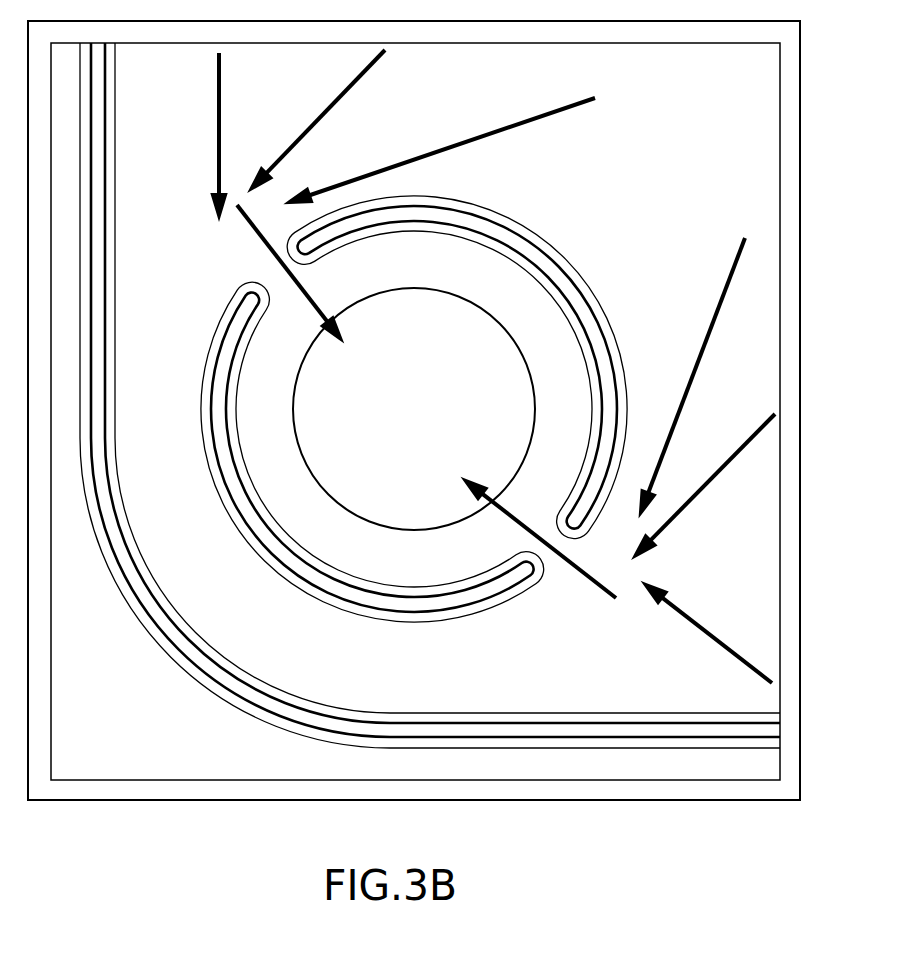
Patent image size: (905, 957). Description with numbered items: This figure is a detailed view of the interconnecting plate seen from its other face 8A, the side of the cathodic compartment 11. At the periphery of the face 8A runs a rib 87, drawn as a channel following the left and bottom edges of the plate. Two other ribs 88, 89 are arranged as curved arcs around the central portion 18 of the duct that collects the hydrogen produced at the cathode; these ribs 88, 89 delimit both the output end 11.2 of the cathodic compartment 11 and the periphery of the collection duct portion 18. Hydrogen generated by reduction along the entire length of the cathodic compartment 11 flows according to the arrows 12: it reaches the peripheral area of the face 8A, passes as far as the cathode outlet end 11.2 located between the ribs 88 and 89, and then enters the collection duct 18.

The face of the interconnecting plate 8A is at (170, 747).
The cathodic compartment 11 is at (478, 696).
The output end of the cathodic compartment 11.2 is at (273, 277).
The arrows 12 is at (367, 172).
The hydrogen collection duct 18 is at (443, 352).
The rib 87 is at (543, 730).
The rib 88 is at (388, 600).
The rib 89 is at (575, 297).